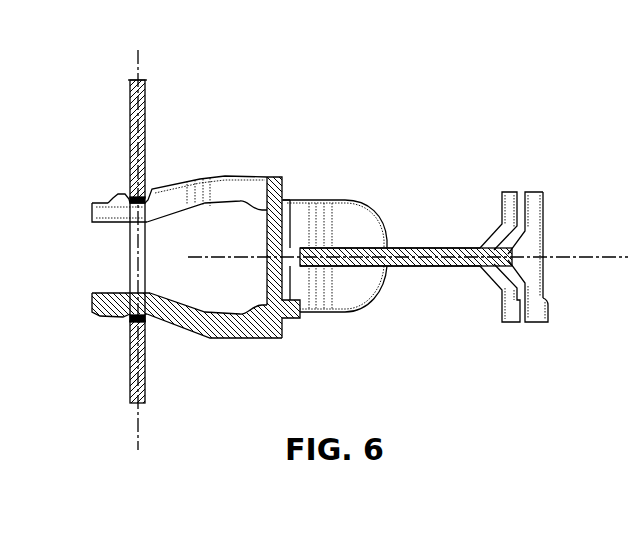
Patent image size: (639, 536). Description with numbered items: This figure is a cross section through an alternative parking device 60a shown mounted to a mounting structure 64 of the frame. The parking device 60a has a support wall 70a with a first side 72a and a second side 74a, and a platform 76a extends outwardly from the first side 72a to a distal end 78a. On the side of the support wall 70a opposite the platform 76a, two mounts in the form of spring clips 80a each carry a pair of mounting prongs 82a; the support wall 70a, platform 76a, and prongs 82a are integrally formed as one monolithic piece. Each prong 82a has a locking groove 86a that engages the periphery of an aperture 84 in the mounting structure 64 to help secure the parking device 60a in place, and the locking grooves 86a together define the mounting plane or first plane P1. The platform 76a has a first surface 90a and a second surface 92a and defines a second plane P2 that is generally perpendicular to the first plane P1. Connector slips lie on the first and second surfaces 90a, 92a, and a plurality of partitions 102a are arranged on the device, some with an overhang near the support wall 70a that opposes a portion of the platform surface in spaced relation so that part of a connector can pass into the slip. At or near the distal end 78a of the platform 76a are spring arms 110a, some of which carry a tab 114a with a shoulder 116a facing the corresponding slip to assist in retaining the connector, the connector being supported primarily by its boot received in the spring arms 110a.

The parking device 60a is at (460, 105).
The mounting structure 64 is at (147, 101).
The support wall 70a is at (276, 166).
The first side 72a is at (285, 200).
The second side 74a is at (267, 232).
The platform 76a is at (446, 238).
The distal end 78a is at (515, 255).
The spring clip 80a is at (112, 190).
The mounting prong 82a is at (92, 208).
The aperture 84 is at (130, 252).
The locking groove 86a is at (131, 196).
The first surface 90a is at (424, 246).
The second surface 92a is at (424, 268).
The partition 102a is at (360, 222).
The spring arm 110a is at (508, 190).
The tab 114a is at (549, 310).
The shoulder 116a is at (550, 297).
The first plane P1 is at (140, 432).
The second plane P2 is at (205, 258).